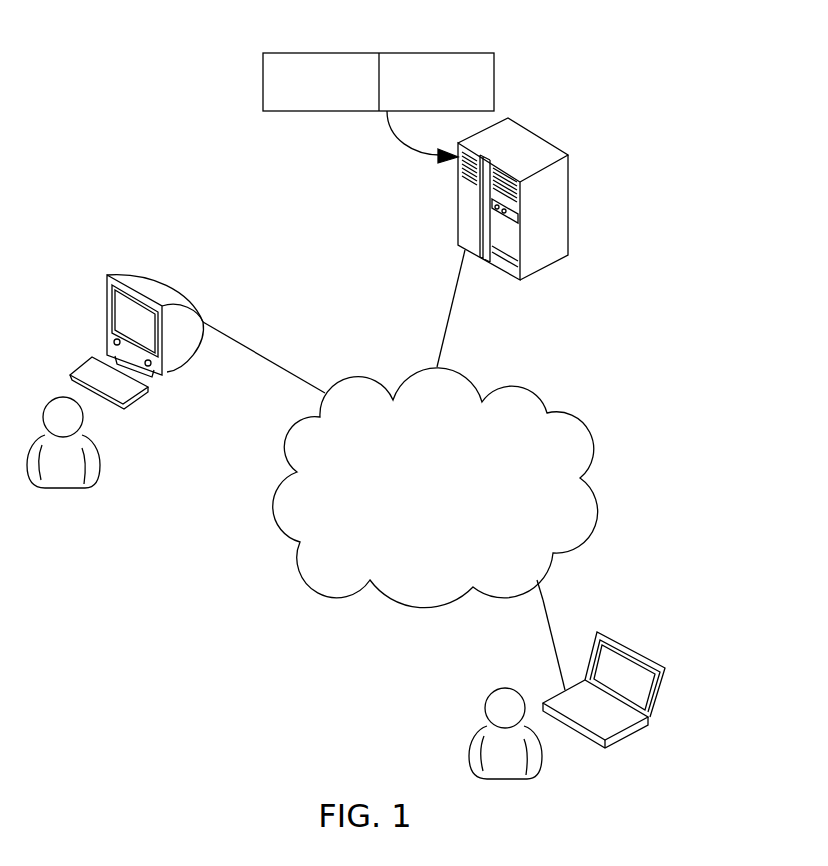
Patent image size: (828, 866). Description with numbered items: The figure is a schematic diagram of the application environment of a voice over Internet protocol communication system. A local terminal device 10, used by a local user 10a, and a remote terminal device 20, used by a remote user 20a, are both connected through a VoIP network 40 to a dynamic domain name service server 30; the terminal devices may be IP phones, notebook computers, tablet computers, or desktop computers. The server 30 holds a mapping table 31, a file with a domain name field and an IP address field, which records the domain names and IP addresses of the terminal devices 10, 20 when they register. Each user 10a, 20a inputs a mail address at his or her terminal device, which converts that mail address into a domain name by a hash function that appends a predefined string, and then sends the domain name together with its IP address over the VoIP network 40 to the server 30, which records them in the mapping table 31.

The local terminal device 10 is at (167, 368).
The local user 10a is at (73, 490).
The remote terminal device 20 is at (622, 740).
The remote user 20a is at (468, 740).
The dynamic domain name service (DDNS) server 30 is at (530, 128).
The mapping table 31 is at (328, 52).
The VoIP network 40 is at (545, 398).